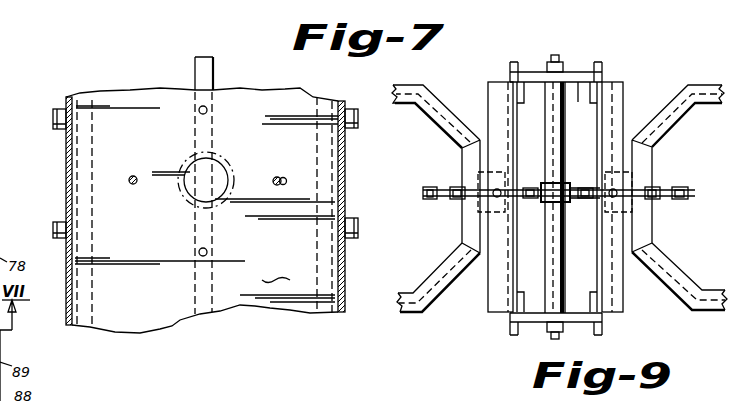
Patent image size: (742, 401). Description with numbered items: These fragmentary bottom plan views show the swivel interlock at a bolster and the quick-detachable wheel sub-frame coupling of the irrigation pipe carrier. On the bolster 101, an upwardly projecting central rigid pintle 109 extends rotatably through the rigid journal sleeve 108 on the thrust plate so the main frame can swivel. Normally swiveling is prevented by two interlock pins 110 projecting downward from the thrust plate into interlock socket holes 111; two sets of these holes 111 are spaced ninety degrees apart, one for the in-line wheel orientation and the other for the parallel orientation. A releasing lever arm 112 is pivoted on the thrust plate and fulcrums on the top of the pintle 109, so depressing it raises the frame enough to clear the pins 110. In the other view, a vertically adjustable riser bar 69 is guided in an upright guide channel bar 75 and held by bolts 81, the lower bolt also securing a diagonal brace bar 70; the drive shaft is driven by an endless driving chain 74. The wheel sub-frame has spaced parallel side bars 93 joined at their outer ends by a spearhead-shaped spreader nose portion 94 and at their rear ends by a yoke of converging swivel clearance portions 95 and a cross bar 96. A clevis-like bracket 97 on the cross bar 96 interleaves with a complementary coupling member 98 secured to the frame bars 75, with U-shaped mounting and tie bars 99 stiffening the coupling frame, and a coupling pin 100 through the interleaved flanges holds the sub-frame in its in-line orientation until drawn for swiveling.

In FIG. 7, the bolster 101 is at (205, 210).
In FIG. 7, the journal sleeve 108 is at (237, 166).
In FIG. 7, the pintle 109 is at (184, 186).
In FIG. 7, the interlock pins 110 is at (137, 165).
In FIG. 7, the interlock socket holes 111 is at (208, 112).
In FIG. 7, the releasing lever arm 112 is at (213, 63).
In FIG. 9, the riser bar 69 is at (522, 81).
In FIG. 9, the diagonal brace bar 70 is at (572, 70).
In FIG. 9, the endless driving chain 74 is at (433, 188).
In FIG. 9, the guide channel bar 75 is at (510, 66).
In FIG. 9, the bolts 81 is at (556, 62).
In FIG. 9, the side bars 93 is at (397, 104).
In FIG. 9, the spreader nose portion 94 is at (676, 98).
In FIG. 9, the swivel clearance portions 95 is at (446, 103).
In FIG. 9, the cross bar 96 is at (463, 153).
In FIG. 9, the clevis-like bracket 97 is at (545, 180).
In FIG. 9, the coupling member 98 is at (511, 271).
In FIG. 9, the mounting and tie bars 99 is at (578, 102).
In FIG. 9, the coupling pin 100 is at (592, 198).